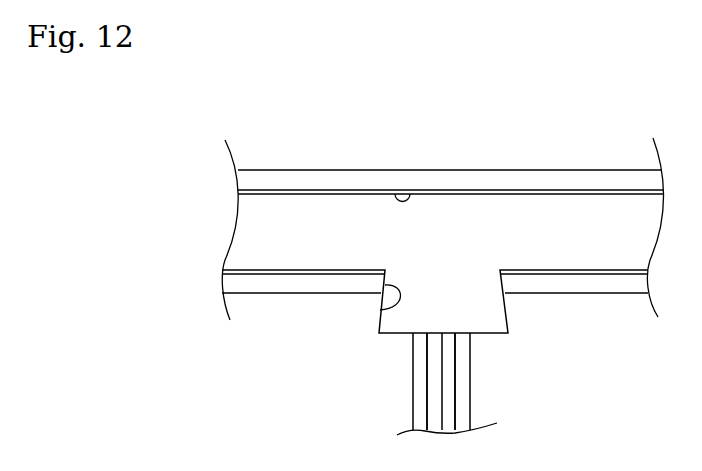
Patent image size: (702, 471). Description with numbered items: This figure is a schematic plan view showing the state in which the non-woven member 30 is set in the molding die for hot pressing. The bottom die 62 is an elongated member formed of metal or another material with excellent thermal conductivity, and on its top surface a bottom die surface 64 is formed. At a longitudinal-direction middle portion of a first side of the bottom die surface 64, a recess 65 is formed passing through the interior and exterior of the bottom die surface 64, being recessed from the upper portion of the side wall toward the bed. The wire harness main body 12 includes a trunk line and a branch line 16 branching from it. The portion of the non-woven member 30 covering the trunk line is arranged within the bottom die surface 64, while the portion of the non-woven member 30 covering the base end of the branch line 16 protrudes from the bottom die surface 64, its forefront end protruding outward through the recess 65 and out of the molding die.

The wire harness main body 12 is at (445, 384).
The branch line 16 is at (412, 388).
The non-woven member 30 is at (442, 219).
The bottom die 62 is at (294, 170).
The bottom die surface 64 is at (415, 193).
The recess 65 is at (380, 310).